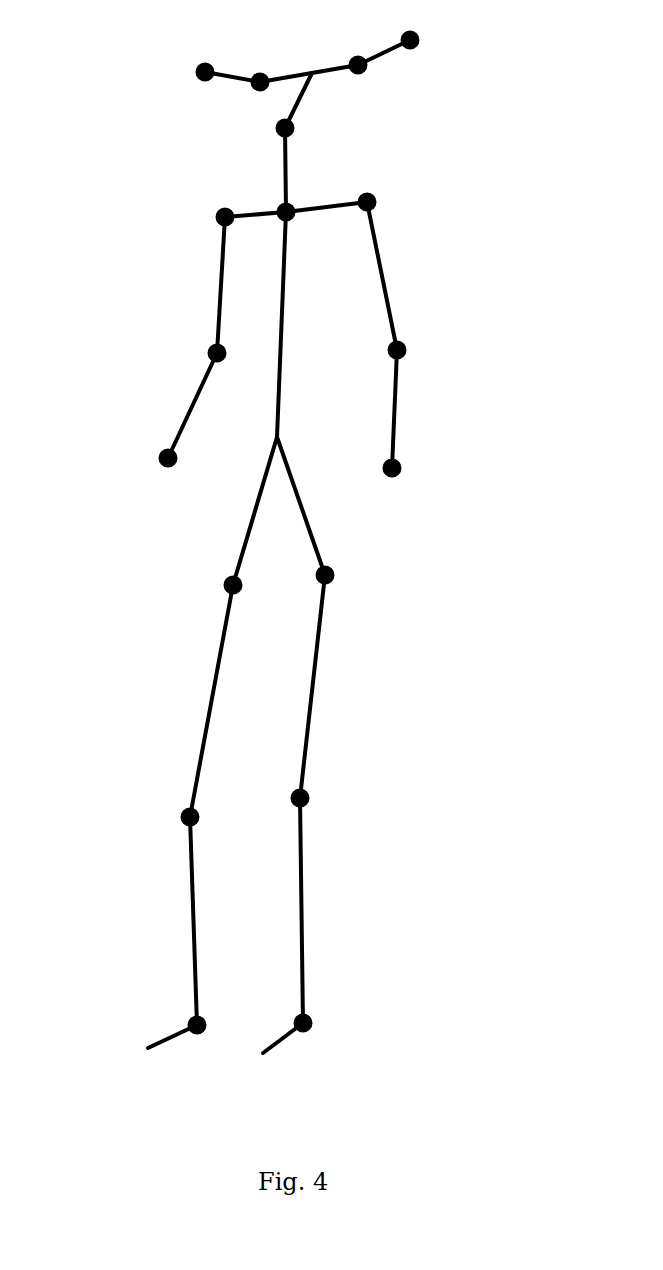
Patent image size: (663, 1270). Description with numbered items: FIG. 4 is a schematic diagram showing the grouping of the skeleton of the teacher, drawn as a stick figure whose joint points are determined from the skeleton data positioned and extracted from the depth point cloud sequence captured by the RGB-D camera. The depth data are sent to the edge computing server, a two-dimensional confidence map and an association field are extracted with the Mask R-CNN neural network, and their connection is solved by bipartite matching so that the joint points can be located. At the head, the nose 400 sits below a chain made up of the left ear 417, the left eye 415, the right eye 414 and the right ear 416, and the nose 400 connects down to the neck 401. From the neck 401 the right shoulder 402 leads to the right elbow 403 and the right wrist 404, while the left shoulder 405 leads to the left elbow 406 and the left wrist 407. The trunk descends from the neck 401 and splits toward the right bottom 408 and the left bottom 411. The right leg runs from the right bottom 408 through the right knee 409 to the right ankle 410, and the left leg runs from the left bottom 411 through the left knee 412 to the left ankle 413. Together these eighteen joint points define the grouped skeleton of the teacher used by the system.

The nose 400 is at (292, 124).
The neck 401 is at (284, 206).
The right shoulder 402 is at (372, 196).
The right elbow 403 is at (403, 345).
The right wrist 404 is at (398, 464).
The left shoulder 405 is at (220, 216).
The left elbow 406 is at (212, 349).
The left wrist 407 is at (162, 455).
The right bottom 408 is at (332, 575).
The right knee 409 is at (308, 797).
The right ankle 410 is at (310, 1022).
The left bottom 411 is at (228, 582).
The left knee 412 is at (185, 815).
The left ankle 413 is at (192, 1022).
The right eye 414 is at (360, 58).
The left eye 415 is at (258, 76).
The right ear 416 is at (418, 38).
The left ear 417 is at (200, 70).